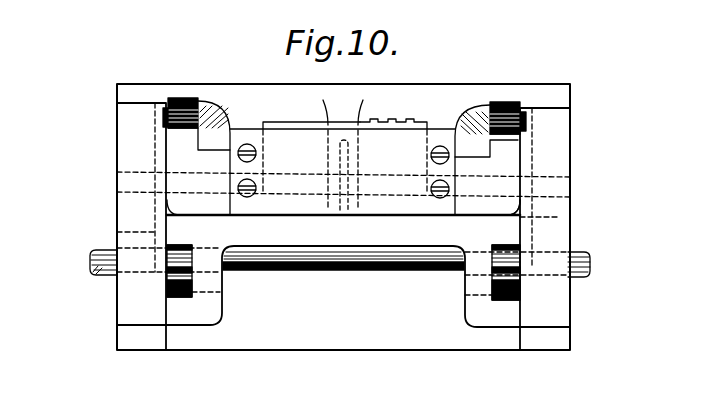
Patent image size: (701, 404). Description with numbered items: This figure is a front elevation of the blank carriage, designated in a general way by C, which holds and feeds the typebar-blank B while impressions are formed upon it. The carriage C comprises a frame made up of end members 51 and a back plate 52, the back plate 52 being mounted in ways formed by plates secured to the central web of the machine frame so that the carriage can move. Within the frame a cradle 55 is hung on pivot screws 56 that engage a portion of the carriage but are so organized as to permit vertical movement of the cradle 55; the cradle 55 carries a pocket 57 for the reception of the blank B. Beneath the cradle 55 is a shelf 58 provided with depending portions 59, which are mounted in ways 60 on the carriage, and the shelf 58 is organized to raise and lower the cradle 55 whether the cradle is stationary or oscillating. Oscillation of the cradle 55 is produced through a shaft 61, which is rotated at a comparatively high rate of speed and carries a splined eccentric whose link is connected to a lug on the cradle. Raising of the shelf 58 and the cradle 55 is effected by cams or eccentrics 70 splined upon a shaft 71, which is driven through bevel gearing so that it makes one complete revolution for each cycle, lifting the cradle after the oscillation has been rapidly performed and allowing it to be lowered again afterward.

The end members 51 is at (137, 217).
The back plate 52 is at (343, 285).
The cradle 55 is at (480, 198).
The pivot screws 56 is at (166, 108).
The pocket 57 is at (428, 126).
The shelf 58 is at (343, 173).
The depending portions 59 is at (207, 307).
The ways 60 is at (117, 233).
The shaft 61 is at (137, 170).
The cams or eccentrics 70 is at (178, 297).
The shaft 71 is at (585, 253).
The typebar-blank B is at (292, 122).
The carriage C is at (570, 164).